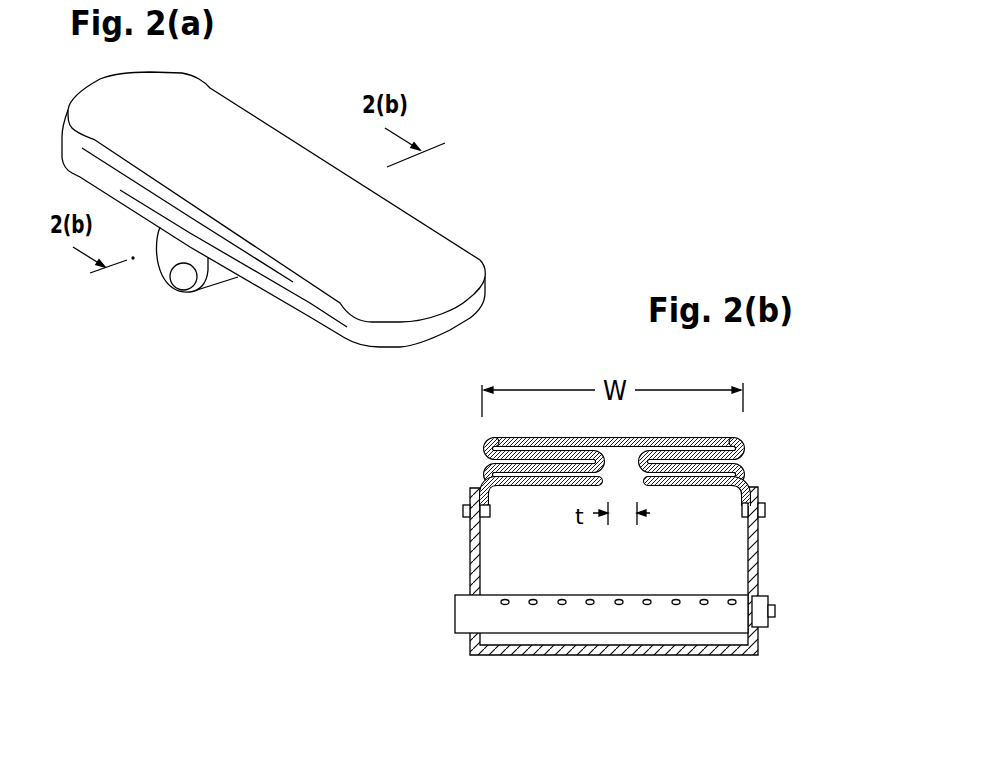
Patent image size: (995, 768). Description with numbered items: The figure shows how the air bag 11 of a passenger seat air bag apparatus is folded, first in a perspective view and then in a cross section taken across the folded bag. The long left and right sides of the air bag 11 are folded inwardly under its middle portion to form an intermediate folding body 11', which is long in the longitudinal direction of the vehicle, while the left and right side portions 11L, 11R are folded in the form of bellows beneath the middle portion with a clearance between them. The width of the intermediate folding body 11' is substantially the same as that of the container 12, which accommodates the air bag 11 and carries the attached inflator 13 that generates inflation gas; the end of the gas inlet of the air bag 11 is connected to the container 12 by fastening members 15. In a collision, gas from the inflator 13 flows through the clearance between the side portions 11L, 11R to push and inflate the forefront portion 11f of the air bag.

In FIG. 2A, the air bag 11 is at (273, 197).
In FIG. 2B, the air bag 11 is at (610, 435).
In FIG. 2A, the intermediate folding body 11' is at (276, 197).
In FIG. 2B, the intermediate folding body 11' is at (614, 417).
In FIG. 2B, the forefront portion 11f is at (614, 417).
In FIG. 2B, the left side portion 11L is at (470, 460).
In FIG. 2B, the right side portion 11R is at (753, 457).
In FIG. 2A, the container 12 is at (217, 280).
In FIG. 2B, the container 12 is at (537, 657).
In FIG. 2A, the inflator 13 is at (177, 280).
In FIG. 2B, the inflator 13 is at (550, 610).
In FIG. 2B, the fastening members 15 is at (463, 510).